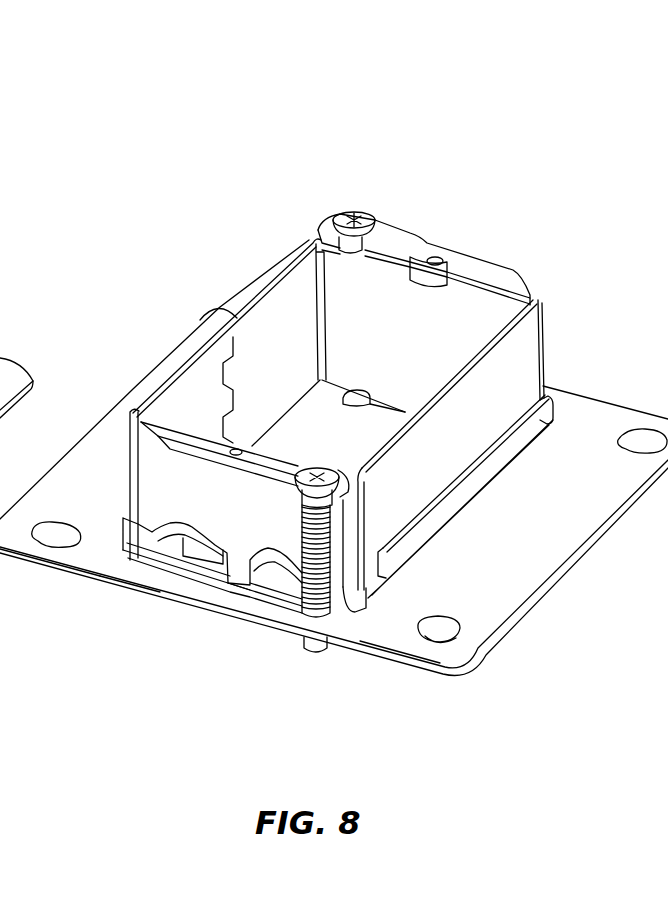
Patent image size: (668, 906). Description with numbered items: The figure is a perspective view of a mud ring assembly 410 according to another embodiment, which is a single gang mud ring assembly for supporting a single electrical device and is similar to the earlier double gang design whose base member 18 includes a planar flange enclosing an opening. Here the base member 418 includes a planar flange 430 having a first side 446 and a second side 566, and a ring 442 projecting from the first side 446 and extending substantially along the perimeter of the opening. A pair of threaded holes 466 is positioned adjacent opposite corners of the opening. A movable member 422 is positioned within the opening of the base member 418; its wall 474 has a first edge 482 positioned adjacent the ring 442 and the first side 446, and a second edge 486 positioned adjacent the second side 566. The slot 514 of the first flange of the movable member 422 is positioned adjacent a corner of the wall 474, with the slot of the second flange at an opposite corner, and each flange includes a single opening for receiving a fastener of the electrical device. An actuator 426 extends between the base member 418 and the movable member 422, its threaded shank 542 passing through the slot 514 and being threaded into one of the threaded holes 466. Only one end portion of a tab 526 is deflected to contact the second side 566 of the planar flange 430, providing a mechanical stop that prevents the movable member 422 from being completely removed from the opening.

The mud ring assembly 410 is at (563, 123).
The base member 418 is at (600, 388).
The movable member 422 is at (553, 300).
The actuator 426 is at (355, 205).
The planar flange 430 is at (363, 658).
The ring 442 is at (467, 495).
The first side 446 is at (97, 553).
The threaded holes 466 is at (330, 598).
The wall 474 is at (507, 377).
The first edge 482 is at (273, 273).
The second edge 486 is at (293, 410).
The slot 514 is at (233, 470).
The tab 526 is at (372, 410).
The threaded shank 542 is at (303, 580).
The second side 566 is at (140, 597).
The base member 18 is at (17, 347).